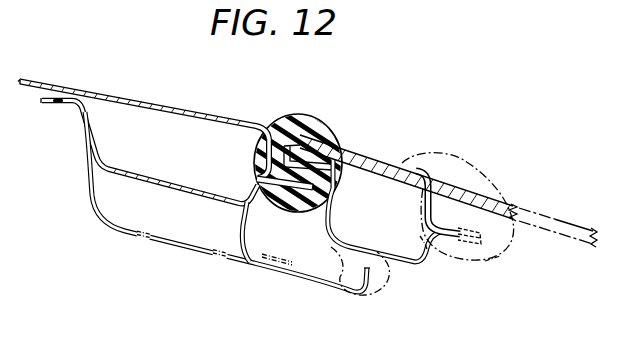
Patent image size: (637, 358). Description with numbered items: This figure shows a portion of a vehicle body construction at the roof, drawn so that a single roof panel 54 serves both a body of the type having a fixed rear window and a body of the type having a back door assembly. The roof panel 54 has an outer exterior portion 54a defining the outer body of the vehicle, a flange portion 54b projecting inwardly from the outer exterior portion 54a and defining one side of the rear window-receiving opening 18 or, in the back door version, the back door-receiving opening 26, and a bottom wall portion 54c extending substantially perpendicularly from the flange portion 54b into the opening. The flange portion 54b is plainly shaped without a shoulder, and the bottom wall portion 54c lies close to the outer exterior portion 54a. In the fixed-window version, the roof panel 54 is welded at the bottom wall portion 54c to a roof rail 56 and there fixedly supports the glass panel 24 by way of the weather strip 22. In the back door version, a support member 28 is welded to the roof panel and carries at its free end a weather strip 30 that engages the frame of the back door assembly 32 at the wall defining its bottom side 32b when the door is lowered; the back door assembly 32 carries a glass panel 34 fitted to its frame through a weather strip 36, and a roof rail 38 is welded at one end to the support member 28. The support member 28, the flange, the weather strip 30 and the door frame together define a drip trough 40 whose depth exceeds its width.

The rear window-receiving opening 18 is at (548, 274).
The back door-receiving opening 26 is at (578, 274).
The weather strip 22 is at (328, 130).
The glass panel 24 is at (384, 166).
The support member 28 is at (300, 278).
The weather strip 30 is at (391, 281).
The back door assembly 32 is at (491, 185).
The bottom side 32b is at (427, 268).
The glass panel 34 is at (559, 212).
The weather strip 36 is at (498, 257).
The roof rail 38 is at (173, 246).
The drip trough 40 is at (277, 267).
The roof panel 54 is at (172, 120).
The outer exterior portion 54a is at (186, 109).
The flange portion 54b is at (272, 125).
The bottom wall portion 54c is at (288, 174).
The roof rail 56 is at (127, 173).